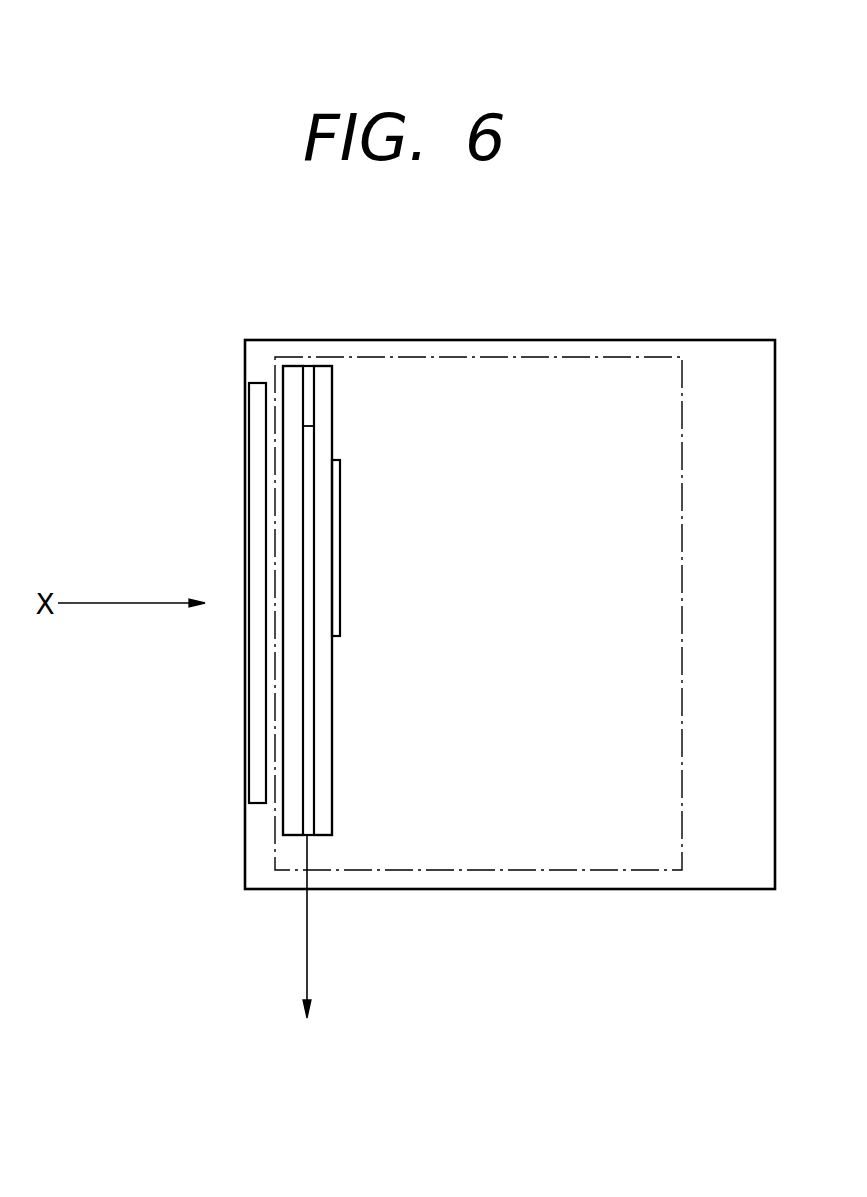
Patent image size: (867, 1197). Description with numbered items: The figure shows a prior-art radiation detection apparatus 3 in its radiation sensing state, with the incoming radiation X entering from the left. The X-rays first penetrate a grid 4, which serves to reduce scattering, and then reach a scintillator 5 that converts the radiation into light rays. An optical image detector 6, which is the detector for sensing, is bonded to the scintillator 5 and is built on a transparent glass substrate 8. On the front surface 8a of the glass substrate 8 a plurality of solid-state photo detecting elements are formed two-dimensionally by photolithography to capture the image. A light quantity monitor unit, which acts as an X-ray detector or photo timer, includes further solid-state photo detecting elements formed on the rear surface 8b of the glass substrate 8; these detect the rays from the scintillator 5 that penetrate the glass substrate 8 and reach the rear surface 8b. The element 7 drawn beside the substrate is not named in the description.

The radiation detection apparatus 3 is at (728, 338).
The grid 4 is at (251, 437).
The scintillator 5 is at (290, 728).
The optical image detector 6 is at (305, 812).
The element 7 is at (340, 488).
The transparent glass substrate 8 is at (320, 655).
The front surface 8a is at (312, 385).
The rear surface 8b is at (332, 401).